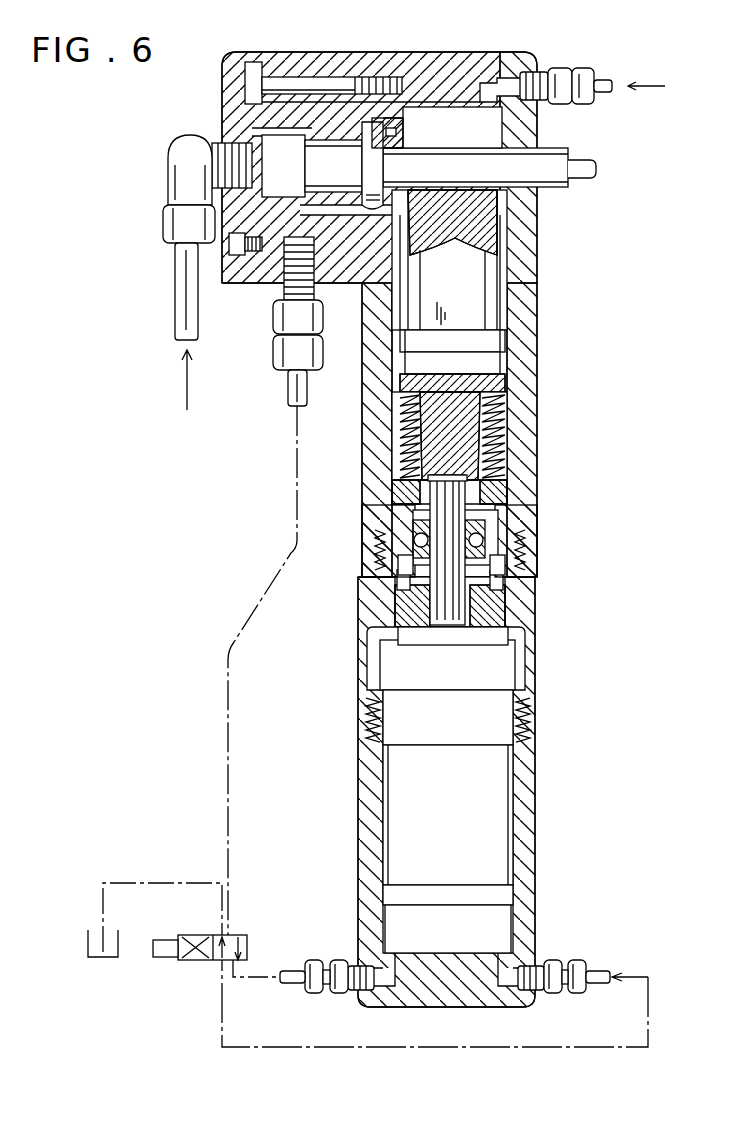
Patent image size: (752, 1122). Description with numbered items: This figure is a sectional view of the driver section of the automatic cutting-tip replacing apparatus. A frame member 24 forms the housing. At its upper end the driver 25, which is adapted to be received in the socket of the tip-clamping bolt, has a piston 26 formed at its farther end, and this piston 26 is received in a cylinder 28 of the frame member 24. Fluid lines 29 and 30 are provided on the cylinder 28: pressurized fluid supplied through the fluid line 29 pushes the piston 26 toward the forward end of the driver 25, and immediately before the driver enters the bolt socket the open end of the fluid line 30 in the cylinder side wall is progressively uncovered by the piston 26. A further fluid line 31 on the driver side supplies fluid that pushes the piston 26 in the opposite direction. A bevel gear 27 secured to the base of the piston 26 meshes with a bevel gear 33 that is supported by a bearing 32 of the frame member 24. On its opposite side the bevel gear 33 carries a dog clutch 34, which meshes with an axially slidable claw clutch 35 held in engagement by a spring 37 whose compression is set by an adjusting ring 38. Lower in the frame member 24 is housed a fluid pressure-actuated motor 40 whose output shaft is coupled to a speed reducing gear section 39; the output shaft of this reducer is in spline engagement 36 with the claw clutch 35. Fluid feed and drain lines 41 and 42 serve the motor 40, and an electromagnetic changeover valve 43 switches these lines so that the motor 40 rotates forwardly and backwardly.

The frame member 24 is at (460, 72).
The driver 25 is at (580, 158).
The piston 26 is at (352, 160).
The bevel gear 27 is at (410, 125).
The cylinder 28 is at (283, 136).
The fluid line 29 is at (185, 283).
The fluid line 30 is at (293, 380).
The fluid line 31 is at (598, 80).
The bearing 32 is at (500, 265).
The bevel gear 33 is at (456, 242).
The dog clutch 34 is at (505, 340).
The claw clutch 35 is at (500, 368).
The spline engagement 36 is at (468, 486).
The spring 37 is at (400, 395).
The adjusting ring 38 is at (395, 497).
The speed reducing gear section 39 is at (520, 600).
The fluid pressure-actuated motor 40 is at (493, 722).
The fluid feed and drain line 41 is at (292, 968).
The fluid feed and drain line 42 is at (598, 968).
The electromagnetic changeover valve 43 is at (167, 921).